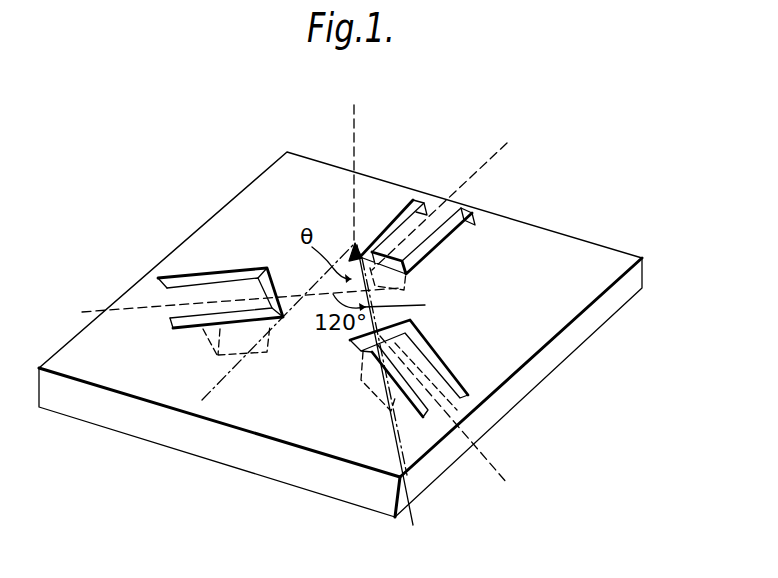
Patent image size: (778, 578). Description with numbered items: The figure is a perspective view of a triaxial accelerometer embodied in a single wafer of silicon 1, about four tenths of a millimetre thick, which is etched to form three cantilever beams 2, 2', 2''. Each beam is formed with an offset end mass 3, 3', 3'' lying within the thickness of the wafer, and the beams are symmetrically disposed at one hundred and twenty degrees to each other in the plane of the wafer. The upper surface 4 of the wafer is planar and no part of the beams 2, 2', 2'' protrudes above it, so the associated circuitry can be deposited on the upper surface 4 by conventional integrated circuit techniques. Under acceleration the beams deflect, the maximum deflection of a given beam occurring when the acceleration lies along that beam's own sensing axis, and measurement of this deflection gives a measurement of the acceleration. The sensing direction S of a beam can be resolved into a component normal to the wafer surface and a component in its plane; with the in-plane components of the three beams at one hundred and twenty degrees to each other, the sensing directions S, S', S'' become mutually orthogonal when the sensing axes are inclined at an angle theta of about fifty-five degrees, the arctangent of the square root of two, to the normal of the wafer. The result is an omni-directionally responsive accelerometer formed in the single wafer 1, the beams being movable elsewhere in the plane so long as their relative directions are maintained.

The wafer of silicon 1 is at (555, 352).
The upper surface 4 is at (598, 258).
The cantilever beam 2 is at (210, 275).
The cantilever beam 2' is at (417, 207).
The cantilever beam 2'' is at (444, 386).
The offset end mass 3 is at (238, 365).
The offset end mass 3' is at (427, 275).
The offset end mass 3'' is at (361, 385).
The sensing direction S is at (278, 373).
The sensing direction S' is at (435, 231).
The sensing direction S'' is at (432, 386).